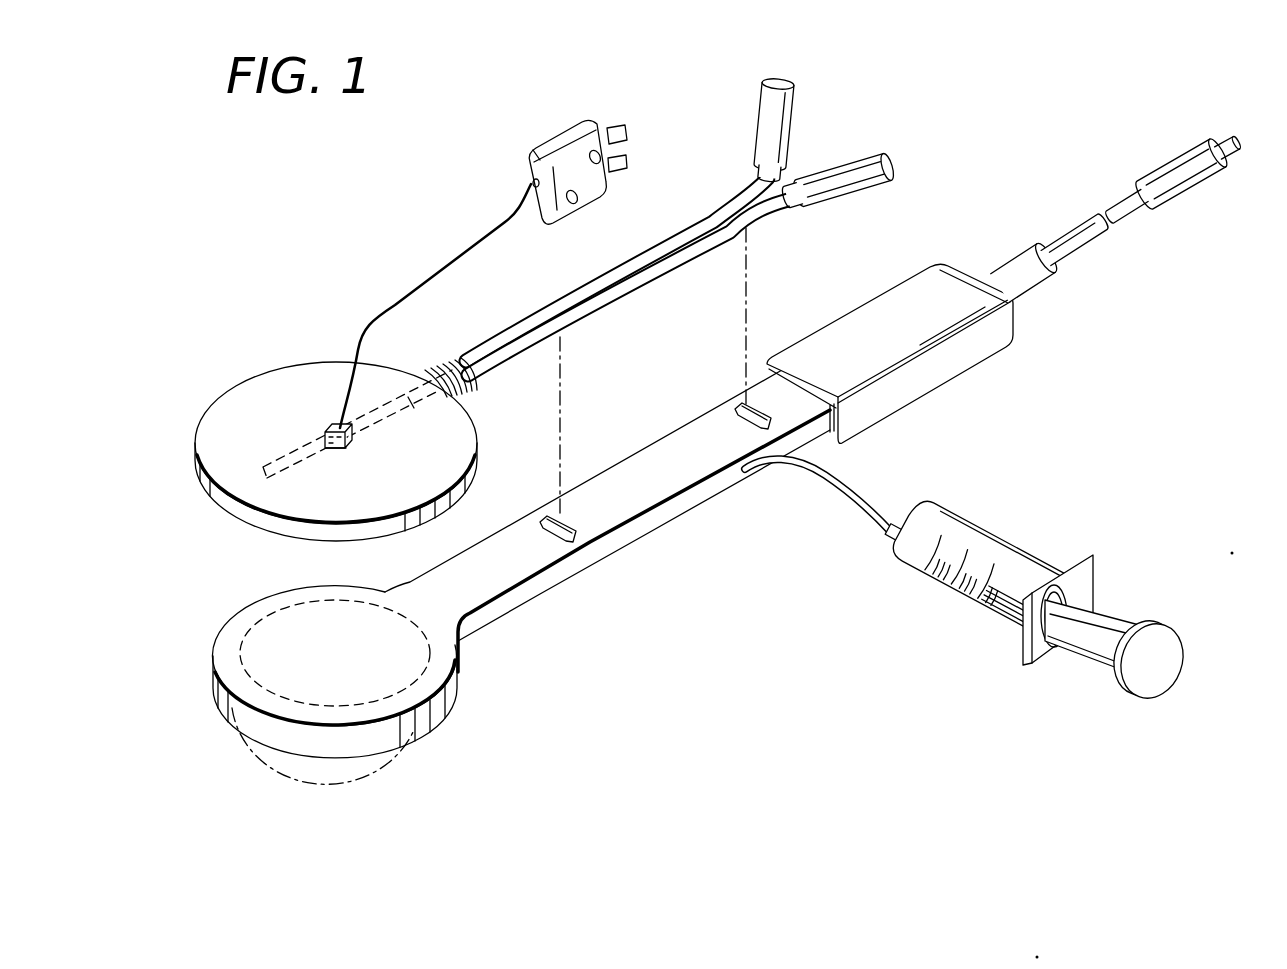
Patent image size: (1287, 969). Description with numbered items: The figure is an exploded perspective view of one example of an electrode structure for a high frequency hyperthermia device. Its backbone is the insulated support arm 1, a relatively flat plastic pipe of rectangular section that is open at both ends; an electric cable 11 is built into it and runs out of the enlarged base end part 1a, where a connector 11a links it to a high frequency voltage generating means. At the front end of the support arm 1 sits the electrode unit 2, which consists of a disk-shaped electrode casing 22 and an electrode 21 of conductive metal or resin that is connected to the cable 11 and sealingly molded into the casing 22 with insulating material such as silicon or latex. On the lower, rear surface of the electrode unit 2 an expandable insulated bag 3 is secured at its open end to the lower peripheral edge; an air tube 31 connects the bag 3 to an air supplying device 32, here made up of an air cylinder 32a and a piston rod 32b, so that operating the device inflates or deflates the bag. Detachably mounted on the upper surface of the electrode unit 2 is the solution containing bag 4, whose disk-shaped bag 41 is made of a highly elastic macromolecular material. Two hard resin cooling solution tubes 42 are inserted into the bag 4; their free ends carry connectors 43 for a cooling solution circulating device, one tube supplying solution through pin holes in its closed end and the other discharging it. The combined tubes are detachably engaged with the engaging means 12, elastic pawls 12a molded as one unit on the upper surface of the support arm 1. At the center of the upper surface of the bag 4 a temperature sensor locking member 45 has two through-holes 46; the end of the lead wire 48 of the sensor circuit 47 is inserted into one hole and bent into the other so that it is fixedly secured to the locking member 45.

The insulated support arm 1 is at (631, 556).
The base end part 1a is at (950, 262).
The electric cable 11 is at (1088, 244).
The connector 11a is at (1185, 197).
The engaging means 12 is at (556, 545).
The elastic pawls 12a is at (543, 520).
The electrode unit 2 is at (294, 679).
The electrode 21 is at (262, 630).
The electrode casing 22 is at (245, 722).
The insulated bag 3 is at (378, 764).
The air tube 31 is at (852, 487).
The air supplying device 32 is at (1045, 590).
The air cylinder 32a is at (1000, 627).
The piston rod 32b is at (1112, 620).
The solution containing bag 4 is at (311, 422).
The disk-shaped bag 41 is at (222, 406).
The cooling solution tube 42 is at (720, 216).
The connectors 43 is at (790, 84).
The temperature sensor locking member 45 is at (352, 440).
The through-holes 46 is at (330, 450).
The sensor circuit 47 is at (573, 128).
The lead wire 48 is at (430, 273).